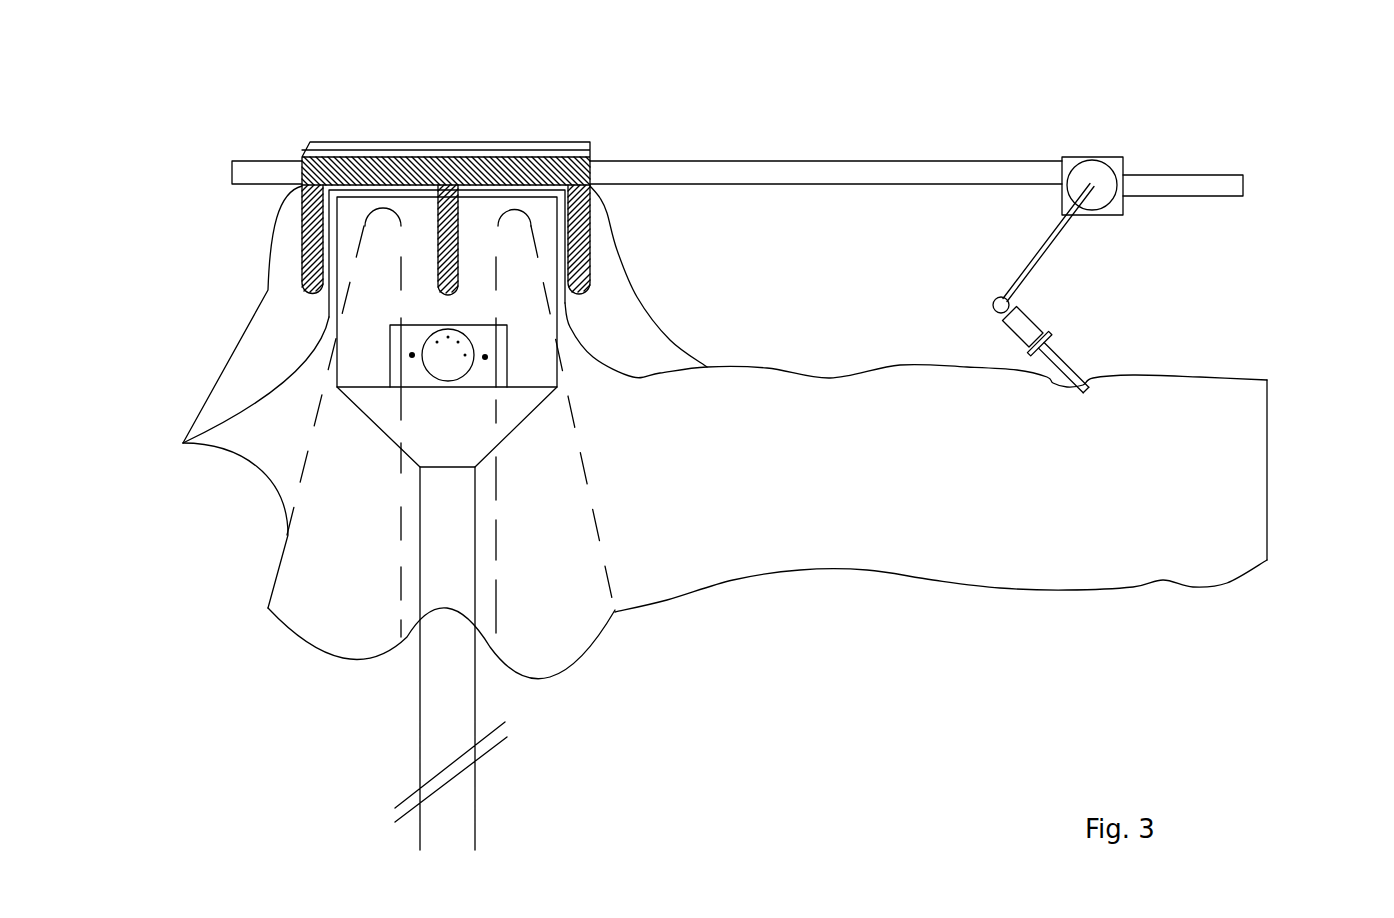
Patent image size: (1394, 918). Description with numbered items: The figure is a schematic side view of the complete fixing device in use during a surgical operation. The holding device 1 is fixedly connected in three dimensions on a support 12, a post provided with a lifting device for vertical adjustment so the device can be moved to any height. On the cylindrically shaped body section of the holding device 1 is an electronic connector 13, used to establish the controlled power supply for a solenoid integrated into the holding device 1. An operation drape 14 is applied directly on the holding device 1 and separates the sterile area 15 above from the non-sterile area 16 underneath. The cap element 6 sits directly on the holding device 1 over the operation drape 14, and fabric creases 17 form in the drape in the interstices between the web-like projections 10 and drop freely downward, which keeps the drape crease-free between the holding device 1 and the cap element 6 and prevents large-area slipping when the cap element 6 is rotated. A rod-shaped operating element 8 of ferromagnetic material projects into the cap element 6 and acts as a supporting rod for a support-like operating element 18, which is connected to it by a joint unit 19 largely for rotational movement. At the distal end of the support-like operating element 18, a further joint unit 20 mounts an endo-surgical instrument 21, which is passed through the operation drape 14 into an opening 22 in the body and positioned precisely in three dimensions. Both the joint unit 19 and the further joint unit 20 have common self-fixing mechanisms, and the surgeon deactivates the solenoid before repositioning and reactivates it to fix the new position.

The holding device 1 is at (370, 315).
The cap element 6 is at (338, 172).
The rod-shaped operating element 8 is at (643, 173).
The web-like projections 10 is at (310, 243).
The support 12 is at (437, 735).
The electronic connector 13 is at (442, 355).
The operation drape 14 is at (272, 297).
The sterile area 15 is at (858, 295).
The non-sterile area 16 is at (851, 620).
The fabric creases 17 is at (523, 268).
The support-like operating element 18 is at (1040, 253).
The joint unit 19 is at (1118, 160).
The further joint unit 20 is at (993, 299).
The endo-surgical instrument 21 is at (1043, 332).
The opening in the body 22 is at (1088, 388).